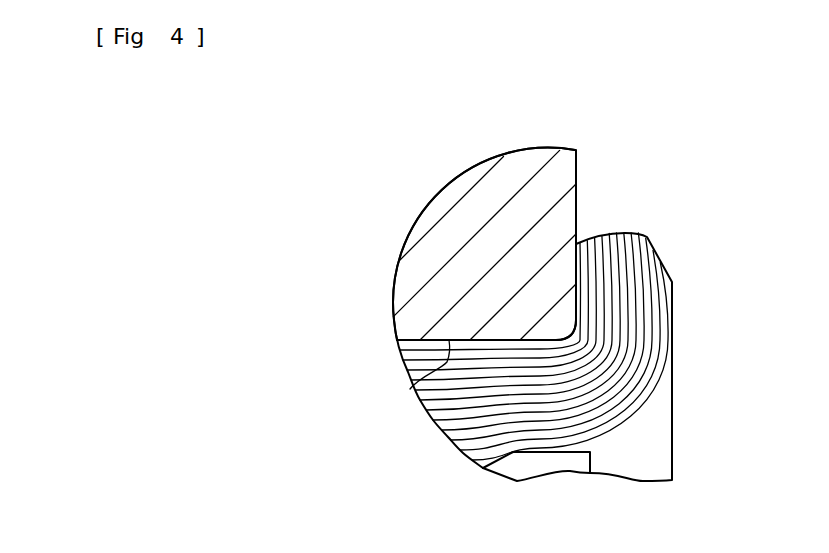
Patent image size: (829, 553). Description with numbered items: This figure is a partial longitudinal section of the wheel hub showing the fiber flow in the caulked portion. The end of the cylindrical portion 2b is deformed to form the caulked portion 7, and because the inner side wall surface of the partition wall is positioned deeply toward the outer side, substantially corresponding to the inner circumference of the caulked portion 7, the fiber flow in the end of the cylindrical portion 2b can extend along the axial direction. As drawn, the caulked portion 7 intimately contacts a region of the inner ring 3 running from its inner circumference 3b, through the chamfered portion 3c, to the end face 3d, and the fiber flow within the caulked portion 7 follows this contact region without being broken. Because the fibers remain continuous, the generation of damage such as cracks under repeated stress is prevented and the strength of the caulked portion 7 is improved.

The inner ring 3 is at (440, 215).
The inner circumference 3b is at (410, 389).
The chamfered portion 3c is at (573, 322).
The end face 3d is at (577, 202).
The cylindrical portion 2b is at (428, 338).
The caulked portion 7 is at (667, 302).